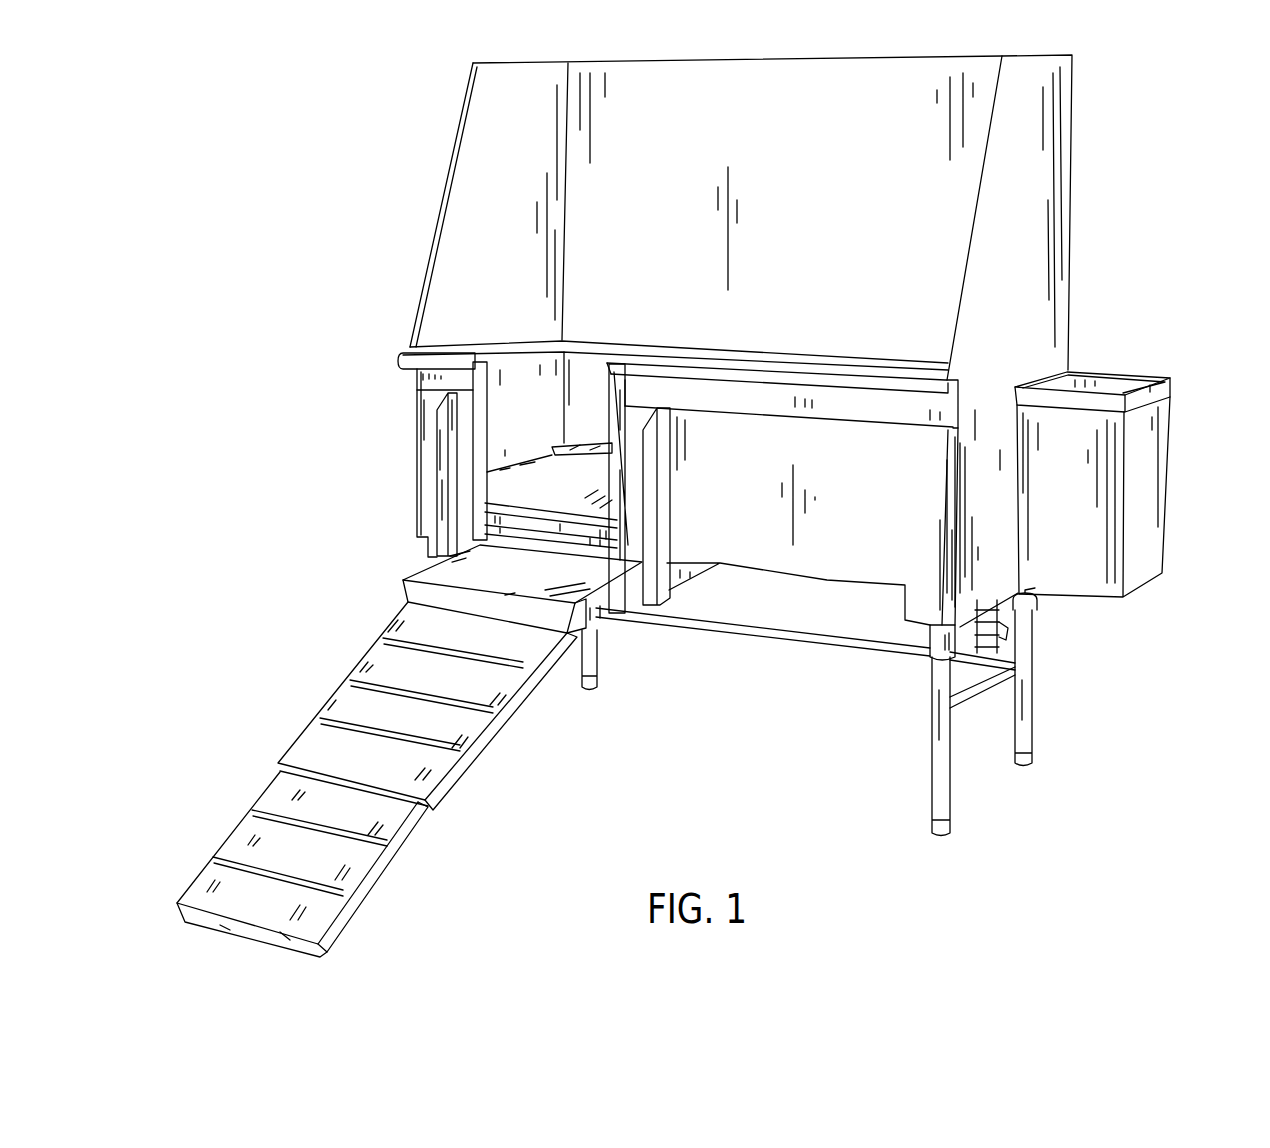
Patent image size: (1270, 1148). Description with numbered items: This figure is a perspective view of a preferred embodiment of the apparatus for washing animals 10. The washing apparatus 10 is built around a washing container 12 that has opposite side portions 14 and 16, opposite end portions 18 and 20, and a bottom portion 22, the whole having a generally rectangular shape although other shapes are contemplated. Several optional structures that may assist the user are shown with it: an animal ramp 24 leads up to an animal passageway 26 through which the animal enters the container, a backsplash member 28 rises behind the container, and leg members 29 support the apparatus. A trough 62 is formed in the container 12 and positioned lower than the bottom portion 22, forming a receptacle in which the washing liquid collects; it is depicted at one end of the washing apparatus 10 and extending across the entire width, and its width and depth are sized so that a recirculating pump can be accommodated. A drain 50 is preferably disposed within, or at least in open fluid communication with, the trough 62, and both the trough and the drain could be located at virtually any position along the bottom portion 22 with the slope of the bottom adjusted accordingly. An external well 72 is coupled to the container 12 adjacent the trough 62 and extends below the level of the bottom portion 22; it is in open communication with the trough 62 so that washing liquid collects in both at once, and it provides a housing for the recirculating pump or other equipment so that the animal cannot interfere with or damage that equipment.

The apparatus for washing animals 10 is at (307, 323).
The washing container 12 is at (757, 536).
The side portion 14 is at (877, 538).
The side portion 16 is at (595, 409).
The end portion 18 is at (533, 425).
The end portion 20 is at (1002, 514).
The bottom portion 22 is at (823, 582).
The animal ramp 24 is at (439, 625).
The animal passageway 26 is at (522, 474).
The backsplash member 28 is at (823, 224).
The leg members 29 is at (1025, 735).
The drain 50 is at (1003, 617).
The trough 62 is at (922, 607).
The external well 72 is at (1088, 525).